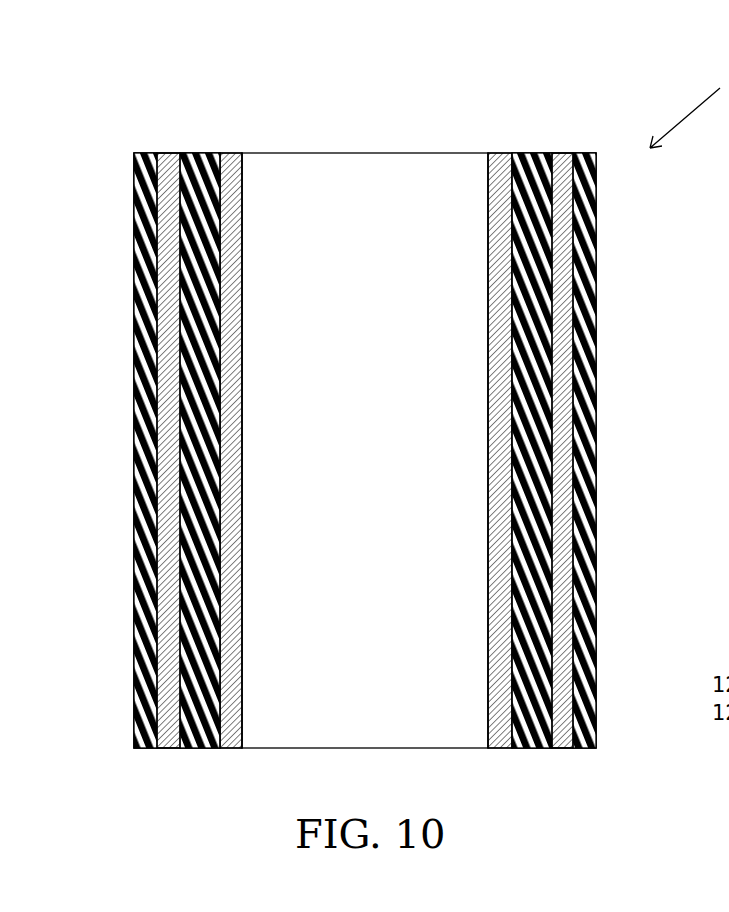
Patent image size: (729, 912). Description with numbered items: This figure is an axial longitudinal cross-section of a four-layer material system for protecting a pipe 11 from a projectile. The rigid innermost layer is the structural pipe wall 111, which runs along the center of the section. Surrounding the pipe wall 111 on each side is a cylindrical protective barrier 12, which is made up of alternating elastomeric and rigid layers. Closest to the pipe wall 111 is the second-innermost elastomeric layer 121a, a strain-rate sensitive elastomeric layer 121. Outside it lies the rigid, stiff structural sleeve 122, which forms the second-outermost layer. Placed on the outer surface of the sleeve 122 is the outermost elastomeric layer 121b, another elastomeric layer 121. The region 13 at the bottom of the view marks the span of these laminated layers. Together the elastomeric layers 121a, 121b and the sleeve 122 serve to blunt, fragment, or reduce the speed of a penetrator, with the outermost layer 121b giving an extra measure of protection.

The pipe 11 is at (217, 147).
The structural pipe wall 111 is at (233, 687).
The cylindrical protective barrier 12 is at (217, 147).
The elastomeric layer 121 is at (376, 450).
The elastomeric layer 121a is at (528, 283).
The elastomeric layer 121b is at (143, 262).
The structural sleeve 122 is at (167, 687).
The electrode region 13 is at (136, 755).